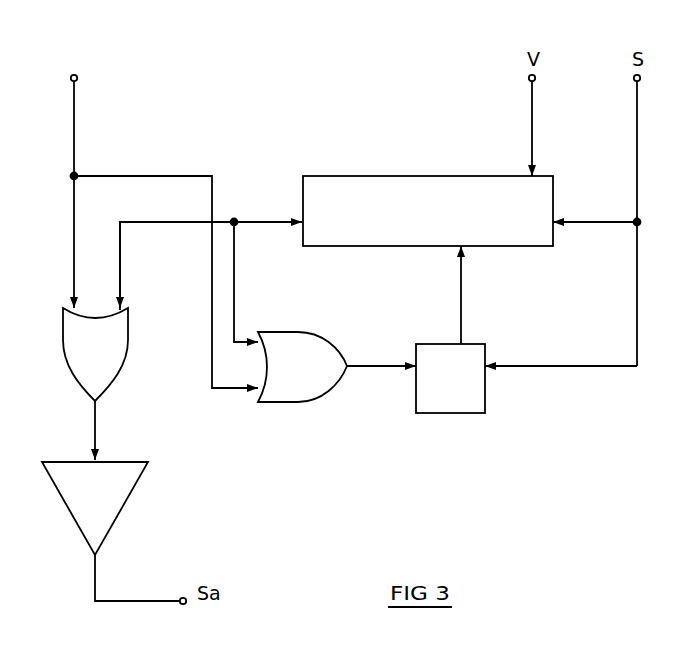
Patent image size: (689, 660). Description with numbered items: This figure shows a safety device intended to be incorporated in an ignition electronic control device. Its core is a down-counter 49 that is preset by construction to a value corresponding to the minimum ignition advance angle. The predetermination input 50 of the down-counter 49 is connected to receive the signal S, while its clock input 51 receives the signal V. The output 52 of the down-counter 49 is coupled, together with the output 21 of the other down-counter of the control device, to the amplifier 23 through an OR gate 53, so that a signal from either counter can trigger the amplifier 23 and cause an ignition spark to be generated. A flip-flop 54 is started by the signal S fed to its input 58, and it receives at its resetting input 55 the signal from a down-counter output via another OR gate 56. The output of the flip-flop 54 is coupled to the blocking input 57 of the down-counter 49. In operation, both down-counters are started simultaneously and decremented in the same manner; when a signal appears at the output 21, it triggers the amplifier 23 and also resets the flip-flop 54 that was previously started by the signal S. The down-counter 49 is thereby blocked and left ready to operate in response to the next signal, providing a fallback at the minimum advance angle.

The output of down-counter 21 is at (181, 217).
The amplifier 23 is at (122, 507).
The down-counter 49 is at (412, 176).
The predetermination input 50 is at (558, 218).
The clock input 51 is at (537, 172).
The output 52 is at (302, 220).
The OR gate 53 is at (127, 358).
The flip-flop 54 is at (415, 413).
The resetting input 55 is at (413, 370).
The OR gate 56 is at (280, 402).
The blocking input 57 is at (465, 249).
The input of flip-flop 58 is at (488, 372).